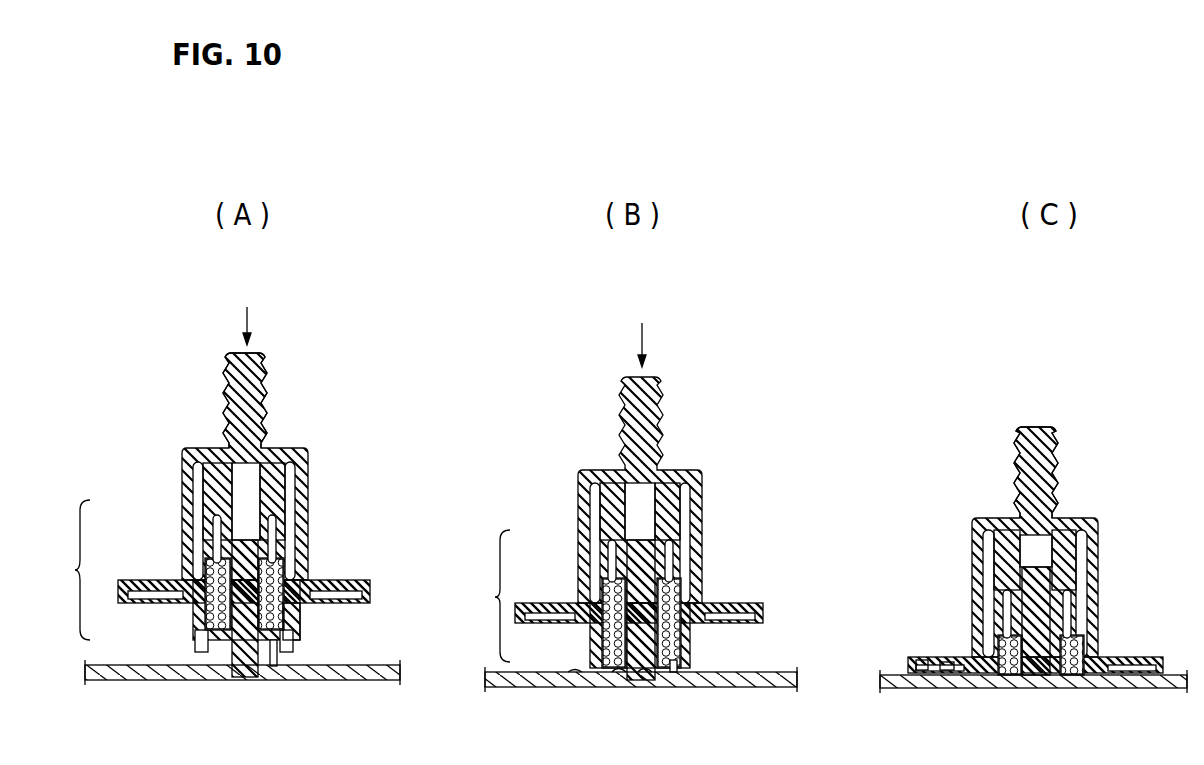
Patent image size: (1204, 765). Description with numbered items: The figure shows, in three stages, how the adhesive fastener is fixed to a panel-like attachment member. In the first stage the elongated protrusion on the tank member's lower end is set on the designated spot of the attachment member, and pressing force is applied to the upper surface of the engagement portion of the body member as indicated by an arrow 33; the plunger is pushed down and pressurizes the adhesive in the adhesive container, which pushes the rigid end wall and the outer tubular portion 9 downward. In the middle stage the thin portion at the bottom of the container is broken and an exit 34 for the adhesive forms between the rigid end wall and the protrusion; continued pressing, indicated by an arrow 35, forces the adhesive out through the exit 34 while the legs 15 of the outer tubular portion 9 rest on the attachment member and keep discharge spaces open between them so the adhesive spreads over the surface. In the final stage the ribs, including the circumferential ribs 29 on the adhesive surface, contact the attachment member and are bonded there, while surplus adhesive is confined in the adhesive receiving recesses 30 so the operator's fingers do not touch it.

The outer tubular portion 9 is at (295, 608).
The legs 15 is at (575, 682).
The circumferential ribs 29 is at (947, 662).
The surplus adhesive receiving recesses 30 is at (927, 657).
The arrow 33 is at (250, 318).
The exit 34 is at (642, 680).
The arrow 35 is at (645, 342).